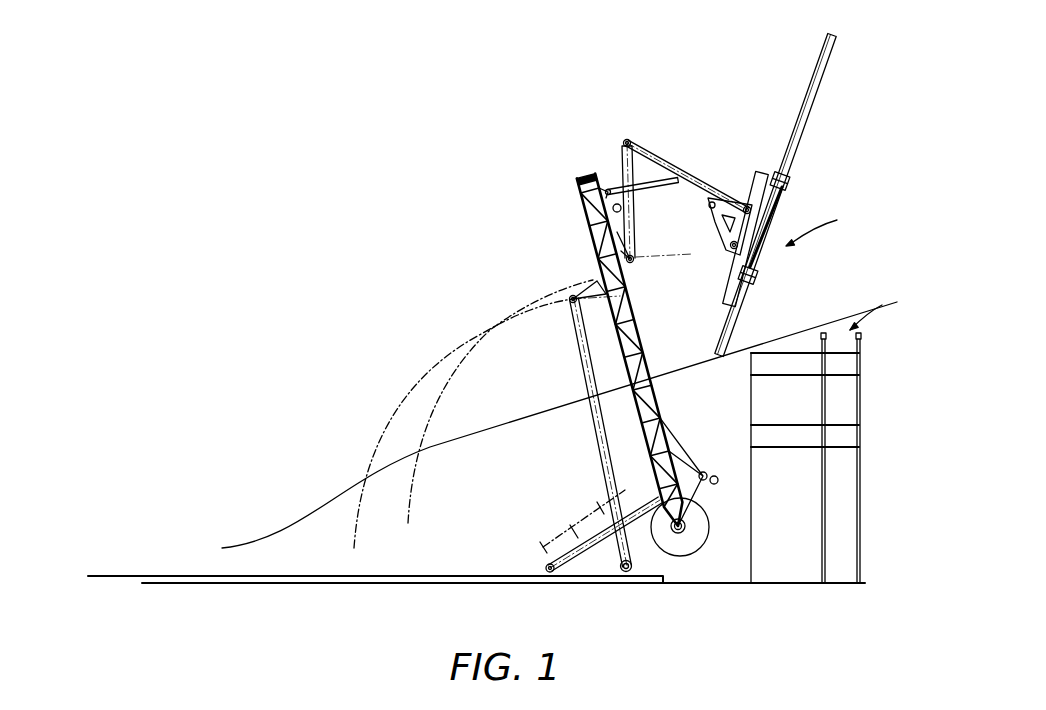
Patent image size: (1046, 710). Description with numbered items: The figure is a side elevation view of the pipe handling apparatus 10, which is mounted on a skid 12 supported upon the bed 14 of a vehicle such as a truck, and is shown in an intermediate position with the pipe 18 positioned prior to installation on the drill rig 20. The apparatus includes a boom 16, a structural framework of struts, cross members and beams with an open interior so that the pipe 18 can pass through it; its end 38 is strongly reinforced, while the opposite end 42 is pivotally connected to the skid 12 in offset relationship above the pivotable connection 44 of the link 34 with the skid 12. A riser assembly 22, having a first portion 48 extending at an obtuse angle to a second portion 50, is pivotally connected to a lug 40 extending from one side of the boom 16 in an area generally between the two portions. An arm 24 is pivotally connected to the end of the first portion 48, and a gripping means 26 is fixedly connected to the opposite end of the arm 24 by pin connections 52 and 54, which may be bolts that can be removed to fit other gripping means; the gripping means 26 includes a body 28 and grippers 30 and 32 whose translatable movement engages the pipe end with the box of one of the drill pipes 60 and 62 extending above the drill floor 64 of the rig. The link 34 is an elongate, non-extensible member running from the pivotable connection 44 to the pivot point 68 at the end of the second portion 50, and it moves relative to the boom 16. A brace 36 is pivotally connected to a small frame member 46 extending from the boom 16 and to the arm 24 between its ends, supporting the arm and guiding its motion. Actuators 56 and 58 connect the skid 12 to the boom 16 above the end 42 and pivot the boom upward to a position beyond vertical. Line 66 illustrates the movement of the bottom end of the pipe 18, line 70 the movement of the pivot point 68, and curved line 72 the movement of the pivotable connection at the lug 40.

The pipe handling apparatus 10 is at (825, 227).
The skid 12 is at (500, 573).
The bed 14 is at (531, 583).
The boom 16 is at (647, 343).
The pipe 18 is at (807, 100).
The drill rig 20 is at (887, 311).
The riser assembly 22 is at (636, 222).
The arm 24 is at (652, 155).
The gripping means 26 is at (761, 170).
The body 28 is at (730, 258).
The gripper 30 is at (788, 177).
The gripper 32 is at (756, 278).
The link 34 is at (582, 373).
The brace 36 is at (641, 196).
The end 38 is at (576, 180).
The lug 40 is at (636, 257).
The end 42 is at (693, 546).
The pivotable connection 44 is at (630, 572).
The frame member 46 is at (610, 188).
The first portion 48 is at (623, 160).
The second portion 50 is at (592, 283).
The pin connection 52 is at (745, 205).
The pin connection 54 is at (733, 247).
The actuator 56 is at (588, 528).
The actuator 58 is at (572, 545).
The drill pipe 60 is at (822, 413).
The drill pipe 62 is at (862, 408).
The drill floor 64 is at (815, 357).
The line 66 is at (323, 507).
The pivot point 68 is at (572, 303).
The line 70 is at (423, 383).
The curved line 72 is at (450, 383).